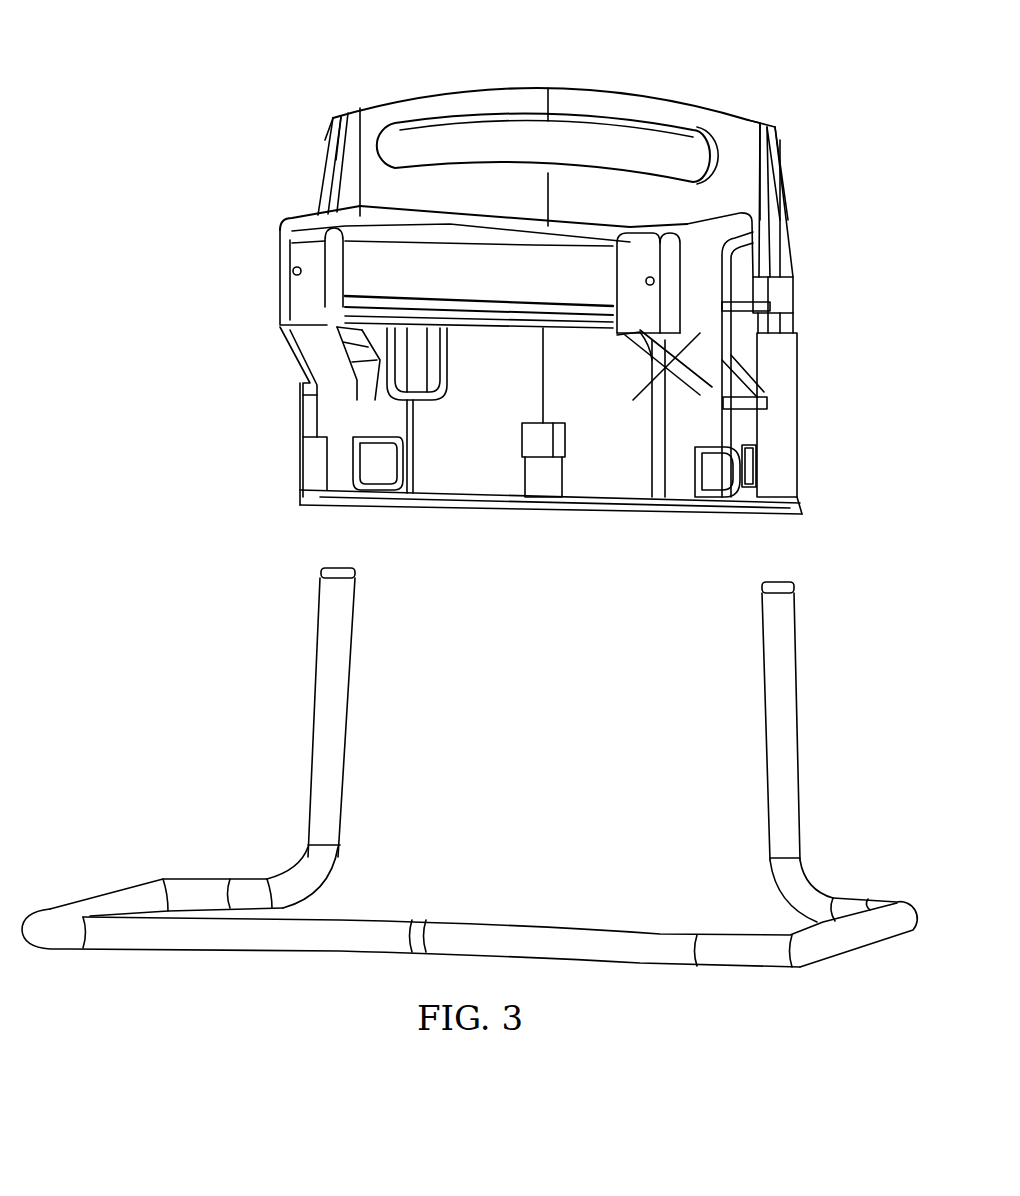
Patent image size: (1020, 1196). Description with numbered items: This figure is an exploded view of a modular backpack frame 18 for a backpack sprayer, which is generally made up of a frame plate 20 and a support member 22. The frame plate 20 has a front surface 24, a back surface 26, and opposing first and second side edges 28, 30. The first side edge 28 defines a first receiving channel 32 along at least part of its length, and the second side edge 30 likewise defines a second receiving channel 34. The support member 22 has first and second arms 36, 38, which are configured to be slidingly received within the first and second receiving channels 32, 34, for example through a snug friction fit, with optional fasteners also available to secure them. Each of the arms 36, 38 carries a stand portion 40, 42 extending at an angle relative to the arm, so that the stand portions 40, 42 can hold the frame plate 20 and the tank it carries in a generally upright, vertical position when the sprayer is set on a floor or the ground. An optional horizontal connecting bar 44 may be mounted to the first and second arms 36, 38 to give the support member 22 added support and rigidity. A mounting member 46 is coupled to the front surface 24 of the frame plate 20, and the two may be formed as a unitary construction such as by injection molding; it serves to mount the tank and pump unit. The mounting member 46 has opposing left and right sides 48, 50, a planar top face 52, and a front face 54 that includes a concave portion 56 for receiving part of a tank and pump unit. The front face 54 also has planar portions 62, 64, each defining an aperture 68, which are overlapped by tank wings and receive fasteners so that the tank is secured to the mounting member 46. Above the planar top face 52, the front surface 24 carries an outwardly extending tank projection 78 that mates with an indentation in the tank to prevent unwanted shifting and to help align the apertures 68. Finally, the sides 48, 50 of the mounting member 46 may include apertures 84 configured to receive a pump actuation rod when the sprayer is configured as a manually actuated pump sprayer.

The modular backpack frame 18 is at (200, 135).
The frame plate 20 is at (792, 203).
The support member 22 is at (806, 770).
The front surface 24 is at (518, 100).
The back surface 26 is at (727, 113).
The first side edge 28 is at (800, 300).
The second side edge 30 is at (300, 397).
The first receiving channel 32 is at (800, 330).
The second receiving channel 34 is at (307, 500).
The first arm 36 is at (787, 649).
The second arm 38 is at (338, 685).
The stand portion 40 is at (853, 948).
The stand portion 42 is at (120, 892).
The horizontal connecting bar 44 is at (523, 933).
The mounting member 46 is at (303, 216).
The left side 48 is at (647, 385).
The right side 50 is at (280, 311).
The planar top face 52 is at (360, 215).
The front face 54 is at (527, 292).
The concave portion 56 is at (483, 240).
The planar portion 62 is at (643, 255).
The planar portion 64 is at (292, 252).
The aperture 68 is at (303, 271).
The tank projection 78 is at (600, 140).
The aperture 84 is at (372, 492).